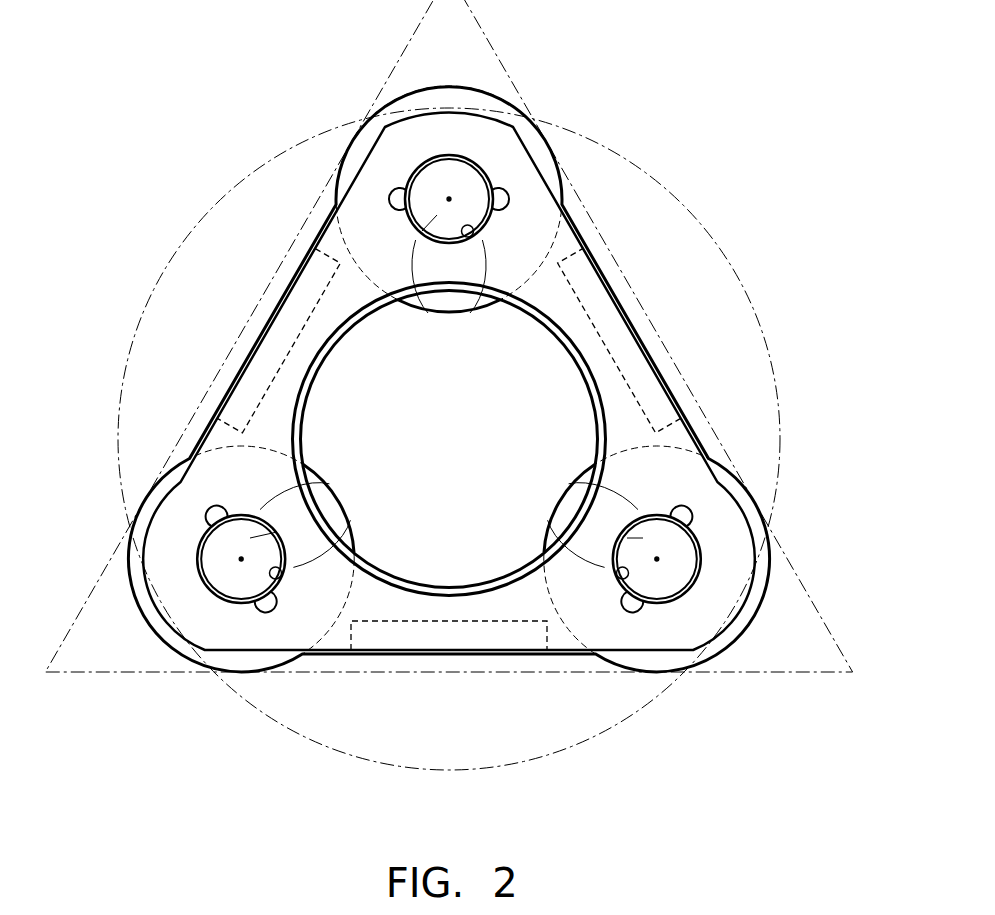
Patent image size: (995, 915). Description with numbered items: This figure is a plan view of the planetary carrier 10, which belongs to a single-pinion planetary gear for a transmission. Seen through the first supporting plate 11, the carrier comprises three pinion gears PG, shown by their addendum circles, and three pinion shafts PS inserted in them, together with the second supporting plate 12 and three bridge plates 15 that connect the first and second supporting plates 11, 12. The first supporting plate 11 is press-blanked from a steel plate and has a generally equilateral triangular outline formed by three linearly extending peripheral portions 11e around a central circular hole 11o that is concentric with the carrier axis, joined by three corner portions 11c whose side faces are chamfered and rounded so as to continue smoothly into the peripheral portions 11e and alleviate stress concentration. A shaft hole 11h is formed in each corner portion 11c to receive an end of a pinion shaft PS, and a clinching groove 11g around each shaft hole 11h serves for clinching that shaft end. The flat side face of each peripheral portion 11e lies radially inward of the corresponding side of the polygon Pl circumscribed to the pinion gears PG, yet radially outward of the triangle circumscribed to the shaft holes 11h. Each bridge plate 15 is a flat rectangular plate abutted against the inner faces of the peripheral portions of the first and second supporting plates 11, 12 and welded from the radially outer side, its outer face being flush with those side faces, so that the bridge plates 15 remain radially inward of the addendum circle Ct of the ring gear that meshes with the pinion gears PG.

The planetary carrier 10 is at (557, 102).
The first supporting plate 11 is at (449, 379).
The second supporting plate 12 is at (322, 229).
The corner portion 11c is at (388, 146).
The peripheral portion 11e is at (262, 300).
The clinching groove 11g is at (508, 198).
The shaft hole 11h is at (465, 313).
The circular hole 11o is at (432, 438).
The bridge plate 15 is at (236, 382).
The pinion shaft PS is at (430, 313).
The pinion gear PG is at (438, 103).
The addendum circle Ct is at (730, 210).
The polygon Pl is at (96, 583).